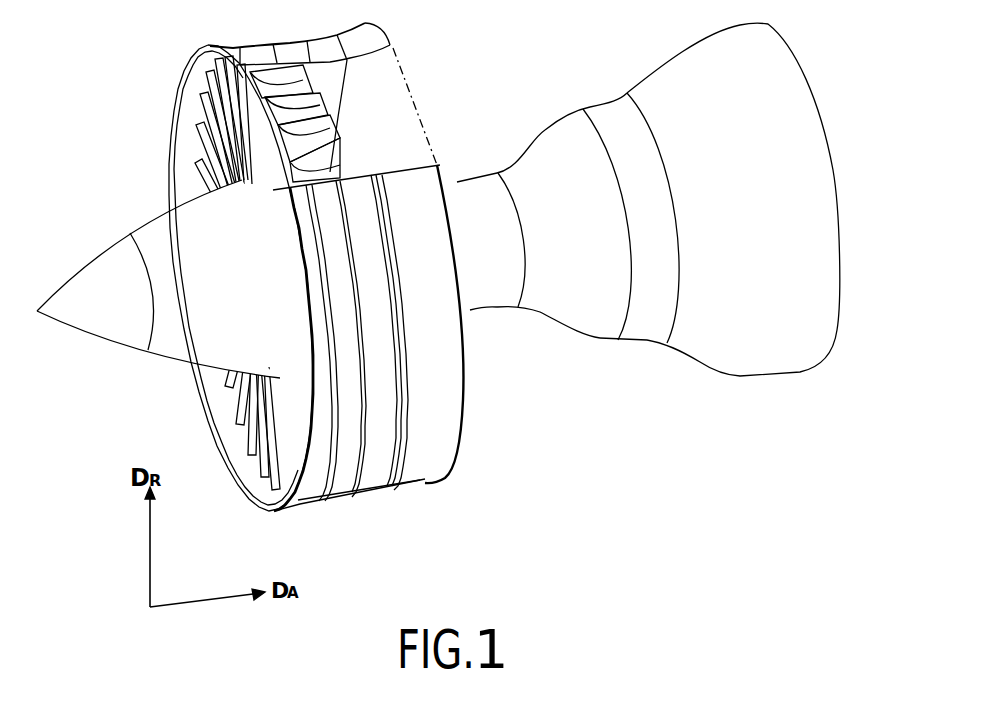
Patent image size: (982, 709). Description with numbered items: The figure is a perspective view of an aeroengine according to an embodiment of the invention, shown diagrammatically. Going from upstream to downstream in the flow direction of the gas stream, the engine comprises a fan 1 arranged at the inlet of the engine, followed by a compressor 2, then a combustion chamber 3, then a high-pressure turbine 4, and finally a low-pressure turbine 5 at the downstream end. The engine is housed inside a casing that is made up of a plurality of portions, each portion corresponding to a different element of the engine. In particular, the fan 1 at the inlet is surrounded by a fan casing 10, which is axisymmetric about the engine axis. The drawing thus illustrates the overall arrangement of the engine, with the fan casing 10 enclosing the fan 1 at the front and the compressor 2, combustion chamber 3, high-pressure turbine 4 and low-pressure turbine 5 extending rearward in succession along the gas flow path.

The fan 1 is at (233, 400).
The compressor 2 is at (467, 190).
The combustion chamber 3 is at (547, 143).
The high-pressure turbine 4 is at (608, 117).
The low-pressure turbine 5 is at (676, 70).
The fan casing 10 is at (453, 425).